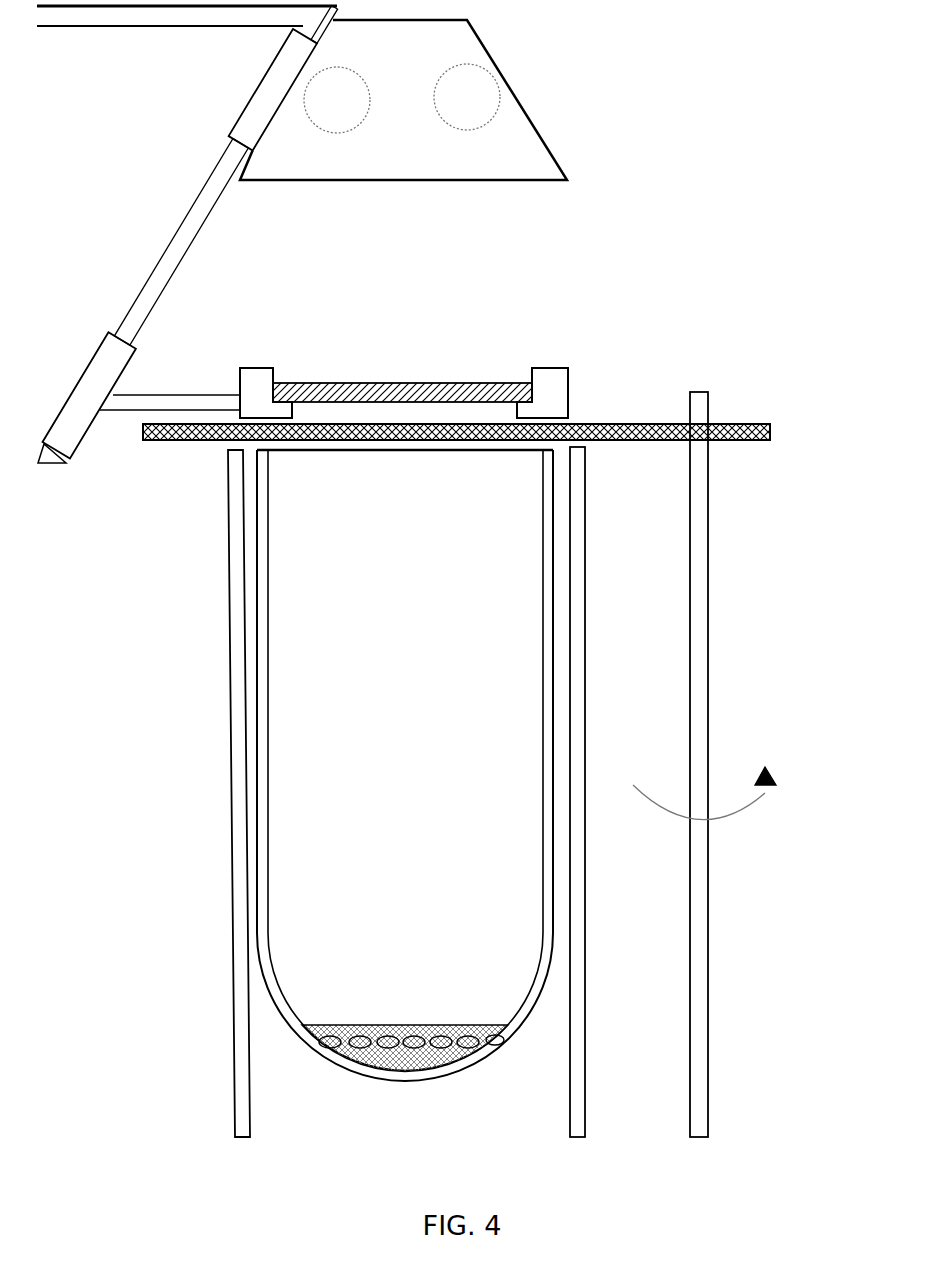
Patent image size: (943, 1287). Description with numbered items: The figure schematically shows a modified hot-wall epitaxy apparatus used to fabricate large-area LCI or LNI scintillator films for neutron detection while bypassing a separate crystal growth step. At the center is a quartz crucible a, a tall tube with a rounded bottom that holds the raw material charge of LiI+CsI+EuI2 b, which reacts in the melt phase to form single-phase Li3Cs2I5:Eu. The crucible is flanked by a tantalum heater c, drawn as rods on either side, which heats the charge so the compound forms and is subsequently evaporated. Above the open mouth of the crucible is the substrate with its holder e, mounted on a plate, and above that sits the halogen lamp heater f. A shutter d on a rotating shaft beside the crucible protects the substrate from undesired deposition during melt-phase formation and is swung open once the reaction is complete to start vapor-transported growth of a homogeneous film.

The quartz crucible a is at (405, 765).
The LiI+CsI+EuI2 b is at (405, 1012).
The tantalum heater c is at (371, 792).
The shutter d is at (707, 764).
The substrate with its holder e is at (404, 376).
The halogen lamp heater f is at (403, 100).